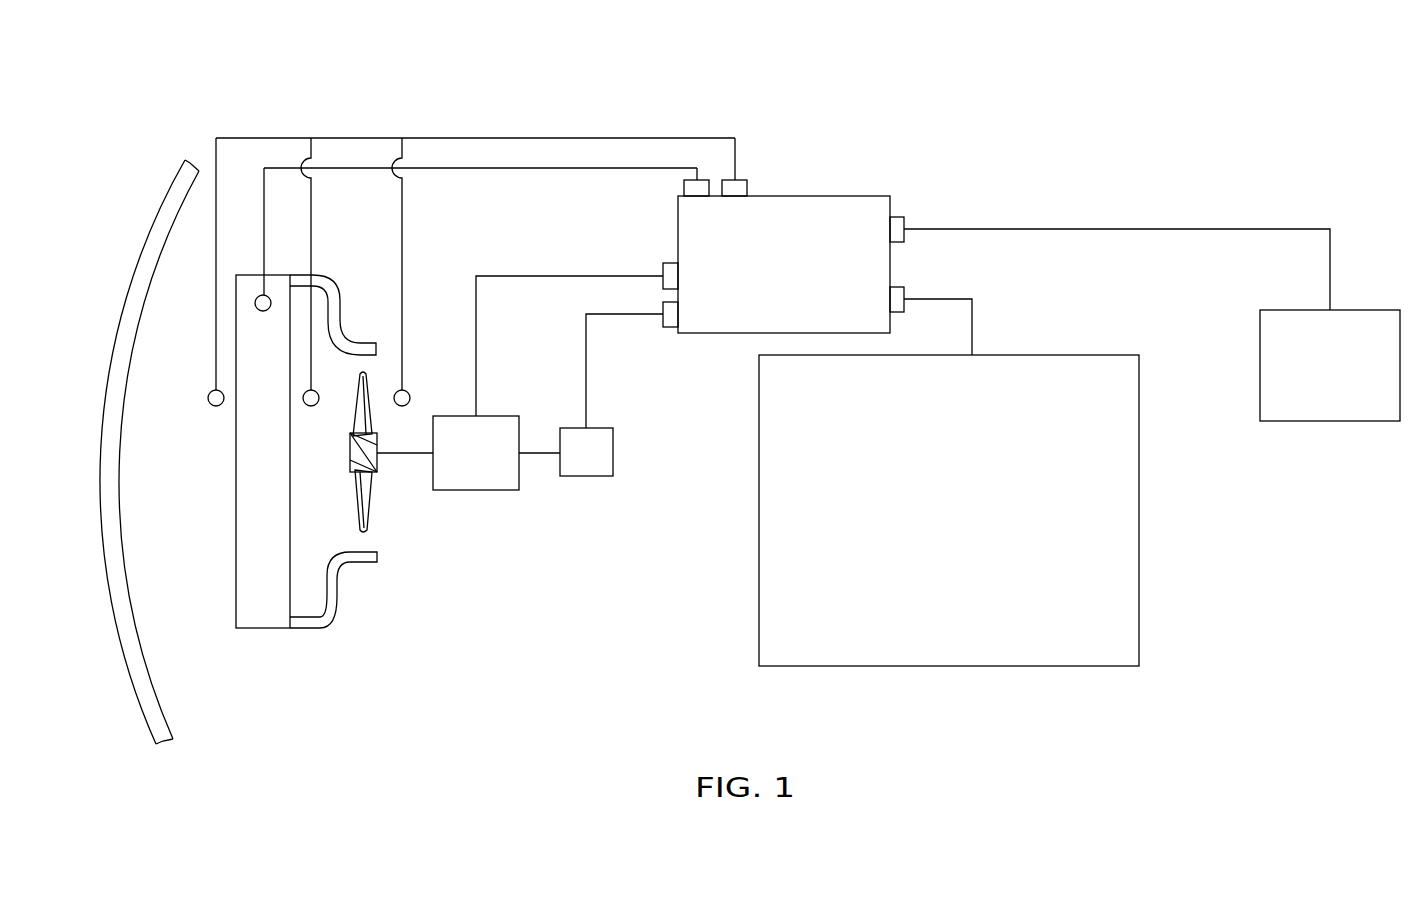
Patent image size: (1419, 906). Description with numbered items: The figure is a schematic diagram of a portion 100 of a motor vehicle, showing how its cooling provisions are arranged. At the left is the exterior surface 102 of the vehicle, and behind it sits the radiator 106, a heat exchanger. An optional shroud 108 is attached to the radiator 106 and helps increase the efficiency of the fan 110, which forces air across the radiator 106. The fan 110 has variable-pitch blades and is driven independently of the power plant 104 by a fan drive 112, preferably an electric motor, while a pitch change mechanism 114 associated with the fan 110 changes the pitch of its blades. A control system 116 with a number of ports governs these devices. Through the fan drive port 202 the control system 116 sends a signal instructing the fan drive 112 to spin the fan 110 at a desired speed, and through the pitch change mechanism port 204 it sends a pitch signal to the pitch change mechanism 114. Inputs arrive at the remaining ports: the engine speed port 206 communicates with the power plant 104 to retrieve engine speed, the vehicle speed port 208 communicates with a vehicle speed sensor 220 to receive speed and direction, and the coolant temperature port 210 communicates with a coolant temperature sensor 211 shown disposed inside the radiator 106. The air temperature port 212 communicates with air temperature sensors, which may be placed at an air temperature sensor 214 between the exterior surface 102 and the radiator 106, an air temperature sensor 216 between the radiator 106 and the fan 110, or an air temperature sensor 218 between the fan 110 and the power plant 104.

The portion of a motor vehicle 100 is at (428, 96).
The exterior surface 102 is at (118, 326).
The power plant 104 is at (928, 525).
The radiator 106 is at (258, 628).
The shroud 108 is at (332, 628).
The fan 110 is at (383, 528).
The fan drive 112 is at (456, 467).
The pitch change mechanism 114 is at (566, 467).
The control system 116 is at (762, 279).
The fan drive port 202 is at (663, 270).
The pitch change mechanism port 204 is at (670, 327).
The engine speed port 206 is at (904, 294).
The vehicle speed port 208 is at (897, 217).
The coolant temperature port 210 is at (684, 188).
The coolant temperature sensor 211 is at (263, 311).
The air temperature port 212 is at (747, 188).
The air temperature sensor 214 is at (214, 406).
The air temperature sensor 216 is at (313, 406).
The air temperature sensor 218 is at (409, 393).
The vehicle speed sensor 220 is at (1310, 380).